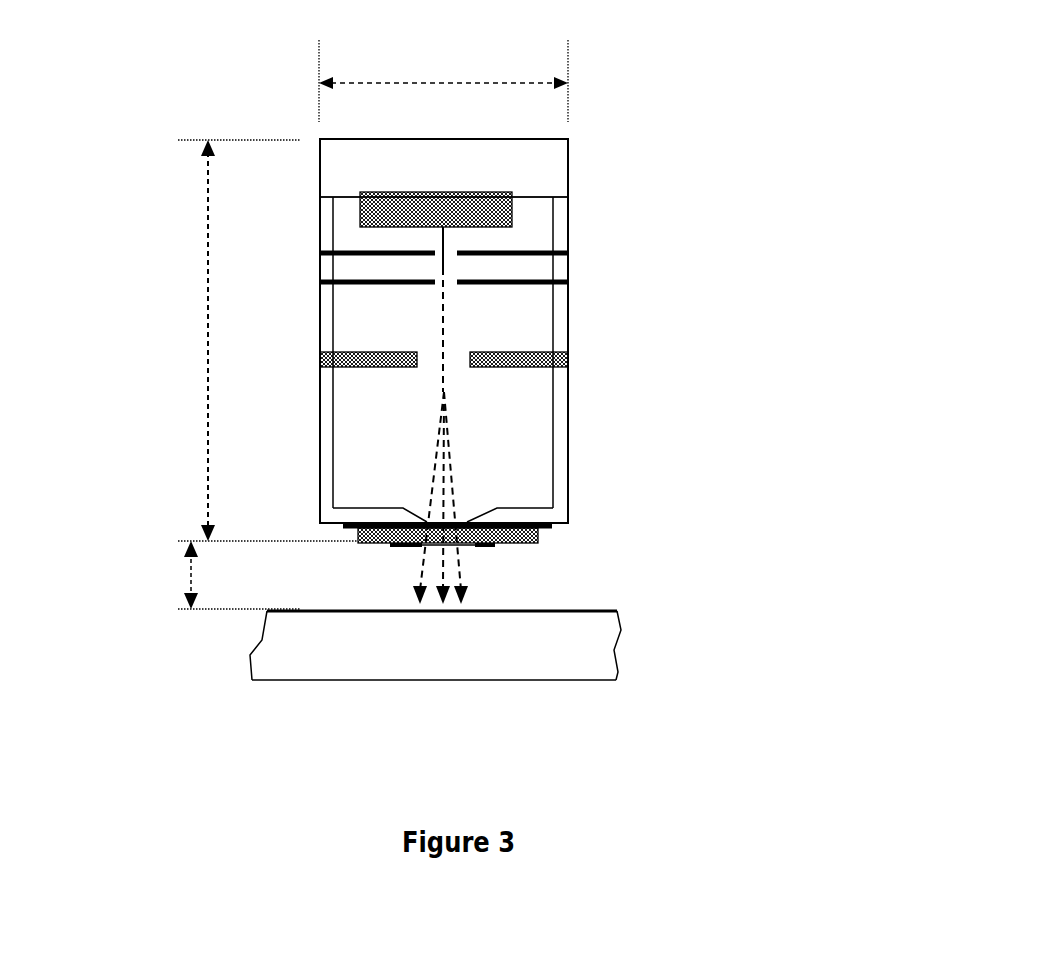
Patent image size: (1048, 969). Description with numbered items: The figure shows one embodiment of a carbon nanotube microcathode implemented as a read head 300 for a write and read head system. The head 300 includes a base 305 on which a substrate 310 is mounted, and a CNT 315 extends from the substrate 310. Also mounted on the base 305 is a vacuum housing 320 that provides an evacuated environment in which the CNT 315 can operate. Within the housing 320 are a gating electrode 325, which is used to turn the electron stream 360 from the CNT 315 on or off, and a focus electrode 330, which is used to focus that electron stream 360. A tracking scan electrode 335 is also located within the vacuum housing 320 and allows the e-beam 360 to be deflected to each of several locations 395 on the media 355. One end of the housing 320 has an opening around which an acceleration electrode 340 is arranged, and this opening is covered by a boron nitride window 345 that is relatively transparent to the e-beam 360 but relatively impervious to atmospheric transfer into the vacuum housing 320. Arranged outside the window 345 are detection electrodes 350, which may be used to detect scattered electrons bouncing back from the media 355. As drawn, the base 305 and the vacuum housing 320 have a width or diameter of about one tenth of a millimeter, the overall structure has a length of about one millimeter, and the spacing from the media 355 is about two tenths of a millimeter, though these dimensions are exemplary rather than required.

The head 300 is at (229, 39).
The base 305 is at (444, 168).
The substrate 310 is at (436, 209).
The CNT 315 is at (430, 239).
The vacuum housing 320 is at (578, 215).
The gating electrode 325 is at (584, 250).
The focus electrode 330 is at (585, 288).
The tracking scan electrode 335 is at (585, 372).
The acceleration electrode 340 is at (560, 516).
The boron nitride window 345 is at (558, 541).
The detection electrodes 350 is at (515, 552).
The media 355 is at (435, 645).
The electron stream 360 is at (405, 436).
The locations 395 is at (461, 607).